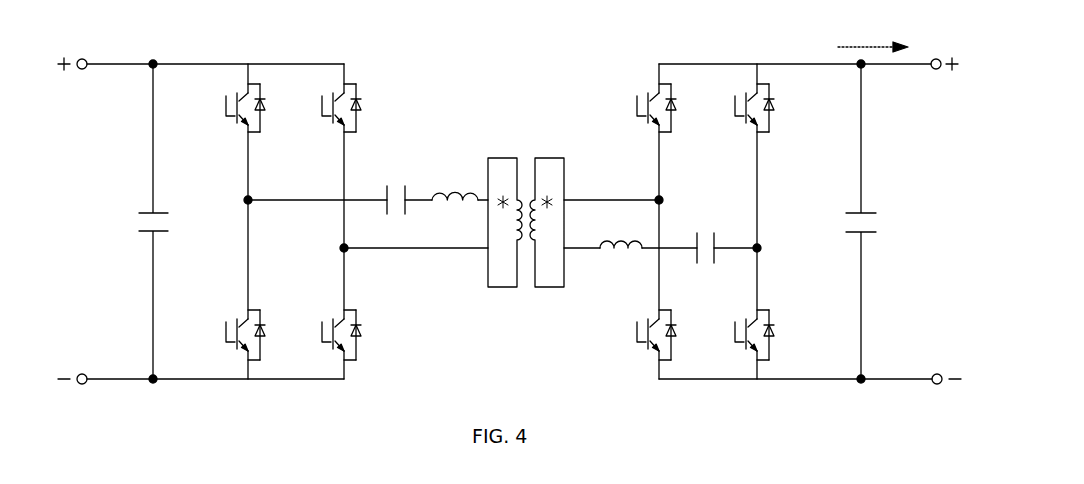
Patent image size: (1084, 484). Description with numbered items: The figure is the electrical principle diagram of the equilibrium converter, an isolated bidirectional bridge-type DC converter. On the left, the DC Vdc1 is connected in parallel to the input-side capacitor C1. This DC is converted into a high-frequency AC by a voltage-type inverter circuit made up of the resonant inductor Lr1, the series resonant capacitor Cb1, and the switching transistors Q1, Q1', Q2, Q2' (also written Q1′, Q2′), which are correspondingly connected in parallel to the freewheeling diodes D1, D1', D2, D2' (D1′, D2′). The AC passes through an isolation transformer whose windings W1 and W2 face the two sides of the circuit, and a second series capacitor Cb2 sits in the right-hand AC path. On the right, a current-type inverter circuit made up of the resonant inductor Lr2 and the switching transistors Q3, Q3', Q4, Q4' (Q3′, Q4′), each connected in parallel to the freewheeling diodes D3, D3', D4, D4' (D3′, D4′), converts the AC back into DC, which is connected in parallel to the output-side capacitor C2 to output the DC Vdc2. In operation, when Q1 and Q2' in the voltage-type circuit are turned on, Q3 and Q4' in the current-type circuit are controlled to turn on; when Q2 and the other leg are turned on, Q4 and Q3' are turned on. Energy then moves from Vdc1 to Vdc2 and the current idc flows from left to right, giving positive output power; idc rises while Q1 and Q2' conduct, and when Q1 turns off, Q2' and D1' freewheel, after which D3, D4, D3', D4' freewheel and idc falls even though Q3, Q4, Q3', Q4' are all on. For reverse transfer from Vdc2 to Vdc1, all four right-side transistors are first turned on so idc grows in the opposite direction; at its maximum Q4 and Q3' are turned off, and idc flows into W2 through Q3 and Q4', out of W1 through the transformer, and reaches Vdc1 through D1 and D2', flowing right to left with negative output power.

The DC at one end Vdc1 is at (55, 218).
The output DC Vdc2 is at (939, 218).
The DC current idc is at (857, 51).
The input-side capacitor C1 is at (169, 221).
The output-side capacitor C2 is at (845, 221).
The series resonant capacitor Cb1 is at (394, 190).
The second blocking capacitor Cb2 is at (705, 238).
The resonant inductor Lr1 is at (455, 183).
The resonant inductor Lr2 is at (621, 236).
The isolation transformer winding W1 is at (492, 222).
The isolation transformer winding W2 is at (556, 222).
The switching transistor Q1 is at (231, 108).
The switching transistor Q2 is at (327, 108).
The switching transistor Q3 is at (642, 108).
The switching transistor Q4 is at (740, 108).
The switching transistor Q1' is at (227, 335).
The switching transistor Q2' is at (327, 335).
The switching transistor Q3' is at (638, 335).
The switching transistor Q4' is at (737, 335).
The switching transistor Q1′ is at (227, 335).
The switching transistor Q2′ is at (327, 335).
The switching transistor Q3′ is at (638, 335).
The switching transistor Q4′ is at (737, 335).
The freewheeling diode D1 is at (270, 111).
The freewheeling diode D2 is at (366, 111).
The freewheeling diode D3 is at (681, 111).
The freewheeling diode D4 is at (779, 111).
The freewheeling diode D1' is at (271, 339).
The freewheeling diode D2' is at (368, 339).
The freewheeling diode D3' is at (682, 339).
The freewheeling diode D4' is at (780, 339).
The freewheeling diode D1′ is at (271, 339).
The freewheeling diode D2′ is at (368, 339).
The freewheeling diode D3′ is at (682, 339).
The freewheeling diode D4′ is at (780, 339).